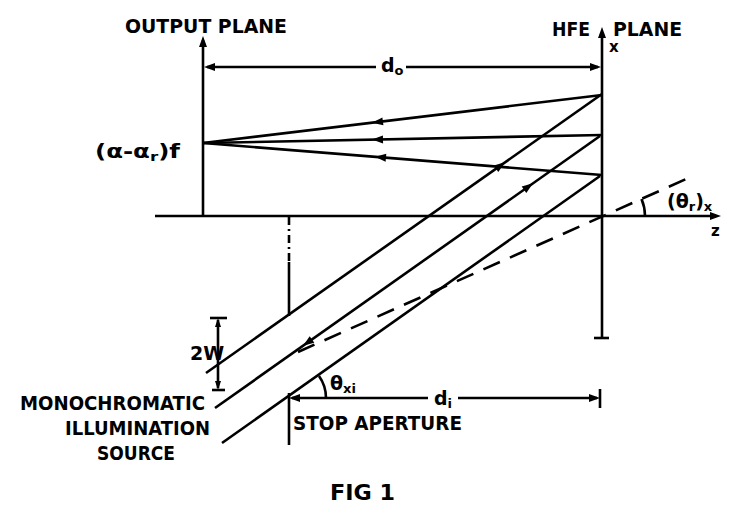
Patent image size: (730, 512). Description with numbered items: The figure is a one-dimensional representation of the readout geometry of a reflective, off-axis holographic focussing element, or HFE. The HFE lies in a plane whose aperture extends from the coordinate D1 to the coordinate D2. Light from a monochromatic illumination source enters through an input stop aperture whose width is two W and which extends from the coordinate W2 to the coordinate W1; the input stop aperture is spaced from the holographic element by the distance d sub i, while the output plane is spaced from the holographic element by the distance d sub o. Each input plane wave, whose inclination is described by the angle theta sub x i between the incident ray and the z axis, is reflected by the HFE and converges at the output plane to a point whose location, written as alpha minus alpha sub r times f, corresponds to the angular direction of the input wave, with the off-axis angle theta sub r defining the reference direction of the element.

The aperture coordinate D1 is at (612, 288).
The aperture coordinate D2 is at (614, 121).
The stop aperture coordinate W1 is at (275, 412).
The stop aperture coordinate W2 is at (271, 295).